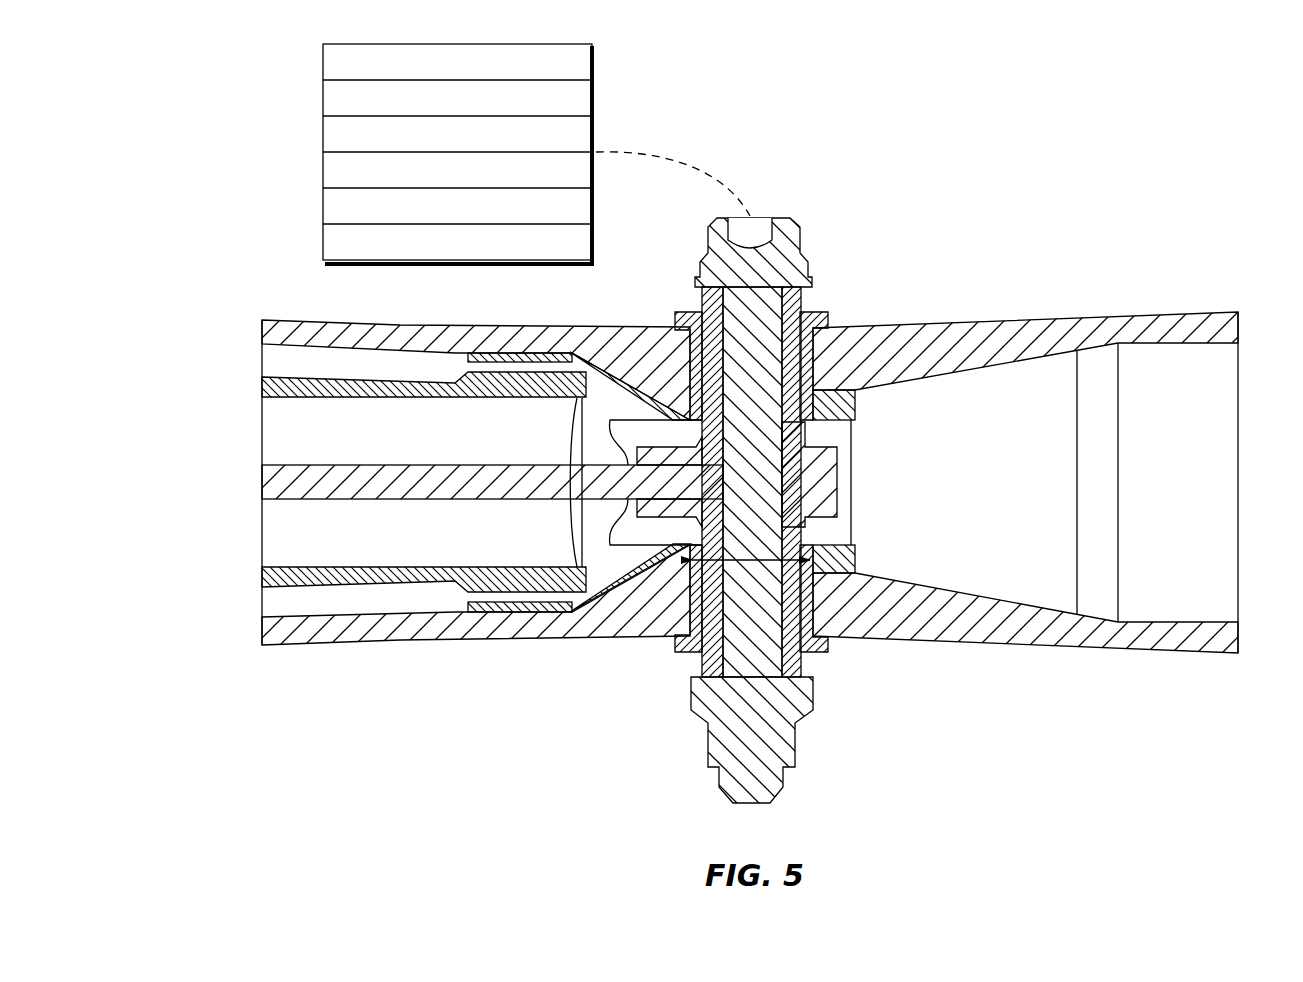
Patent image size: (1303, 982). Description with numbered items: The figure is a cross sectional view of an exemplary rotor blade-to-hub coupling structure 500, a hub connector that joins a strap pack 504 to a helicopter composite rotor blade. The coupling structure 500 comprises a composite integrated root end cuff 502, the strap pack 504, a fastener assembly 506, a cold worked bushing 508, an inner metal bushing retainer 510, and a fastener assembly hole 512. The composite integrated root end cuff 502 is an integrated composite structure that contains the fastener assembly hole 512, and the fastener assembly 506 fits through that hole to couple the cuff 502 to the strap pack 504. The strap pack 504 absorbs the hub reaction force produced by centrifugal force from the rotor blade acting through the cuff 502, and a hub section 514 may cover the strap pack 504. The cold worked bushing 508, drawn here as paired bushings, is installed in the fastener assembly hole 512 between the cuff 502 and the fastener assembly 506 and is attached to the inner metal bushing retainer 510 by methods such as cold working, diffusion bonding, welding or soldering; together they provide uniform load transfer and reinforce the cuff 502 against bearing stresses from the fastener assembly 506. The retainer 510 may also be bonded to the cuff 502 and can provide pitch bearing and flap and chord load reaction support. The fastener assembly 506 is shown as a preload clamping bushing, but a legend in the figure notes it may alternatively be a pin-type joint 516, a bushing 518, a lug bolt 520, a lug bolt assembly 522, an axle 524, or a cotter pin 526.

The rotor blade-to-hub coupling structure 500 is at (284, 228).
The composite integrated root end cuff 502 is at (1152, 636).
The strap pack 504 is at (612, 497).
The fastener assembly 506 is at (700, 270).
The cold worked bushing 508 is at (825, 312).
The inner metal bushing retainer 510 is at (833, 567).
The fastener assembly hole 512 is at (700, 652).
The hub section 514 is at (284, 538).
The pin-type joint 516 is at (457, 62).
The bushing 518 is at (457, 98).
The lug bolt 520 is at (457, 134).
The lug bolt assembly 522 is at (457, 170).
The axle 524 is at (457, 206).
The cotter pin 526 is at (457, 242).